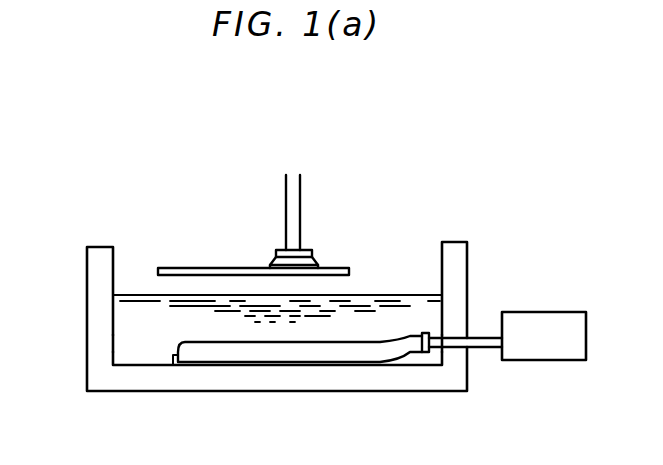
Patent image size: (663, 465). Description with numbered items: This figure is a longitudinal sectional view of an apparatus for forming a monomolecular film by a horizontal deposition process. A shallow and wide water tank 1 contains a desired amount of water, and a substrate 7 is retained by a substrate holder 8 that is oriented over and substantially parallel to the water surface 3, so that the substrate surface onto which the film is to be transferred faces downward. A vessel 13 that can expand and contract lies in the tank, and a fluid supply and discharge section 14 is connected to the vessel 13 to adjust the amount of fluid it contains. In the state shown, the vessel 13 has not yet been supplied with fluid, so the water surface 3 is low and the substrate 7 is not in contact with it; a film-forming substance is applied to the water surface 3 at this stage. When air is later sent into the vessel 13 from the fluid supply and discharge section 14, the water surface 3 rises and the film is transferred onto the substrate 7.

The water tank 1 is at (100, 296).
The water surface 3 is at (370, 292).
The substrate 7 is at (178, 267).
The substrate holder 8 is at (300, 205).
The vessel 13 is at (390, 347).
The fluid supply and discharge section 14 is at (535, 312).